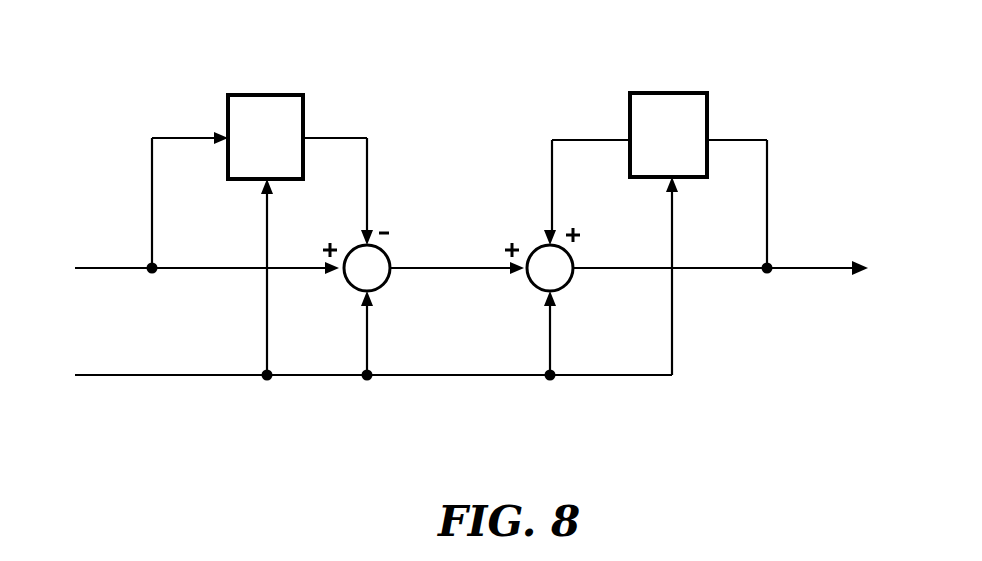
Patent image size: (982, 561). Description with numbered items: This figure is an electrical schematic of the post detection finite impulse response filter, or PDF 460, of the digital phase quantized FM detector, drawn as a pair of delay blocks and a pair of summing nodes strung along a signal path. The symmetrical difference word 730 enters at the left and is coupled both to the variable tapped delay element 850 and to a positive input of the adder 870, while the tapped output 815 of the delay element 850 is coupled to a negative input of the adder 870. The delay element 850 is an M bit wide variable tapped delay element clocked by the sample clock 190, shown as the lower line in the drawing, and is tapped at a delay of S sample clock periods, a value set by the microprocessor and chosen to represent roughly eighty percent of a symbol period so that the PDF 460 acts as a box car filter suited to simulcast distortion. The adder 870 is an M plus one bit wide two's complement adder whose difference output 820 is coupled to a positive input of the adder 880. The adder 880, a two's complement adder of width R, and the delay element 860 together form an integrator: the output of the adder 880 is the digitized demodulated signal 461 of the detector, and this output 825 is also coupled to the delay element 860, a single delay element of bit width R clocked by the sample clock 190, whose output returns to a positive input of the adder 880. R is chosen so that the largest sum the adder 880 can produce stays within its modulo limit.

The post detection FIR filter 460 is at (633, 489).
The symmetrical difference word 730 is at (107, 268).
The sample clock 190 is at (88, 375).
The variable tapped delay element 850 is at (290, 95).
The delayed signal 815 is at (330, 138).
The adder 870 is at (383, 284).
The difference signal 820 is at (423, 268).
The adder 880 is at (566, 284).
The delay element 860 is at (663, 93).
The accumulated signal 825 is at (595, 268).
The digitized demodulated signal 461 is at (798, 268).